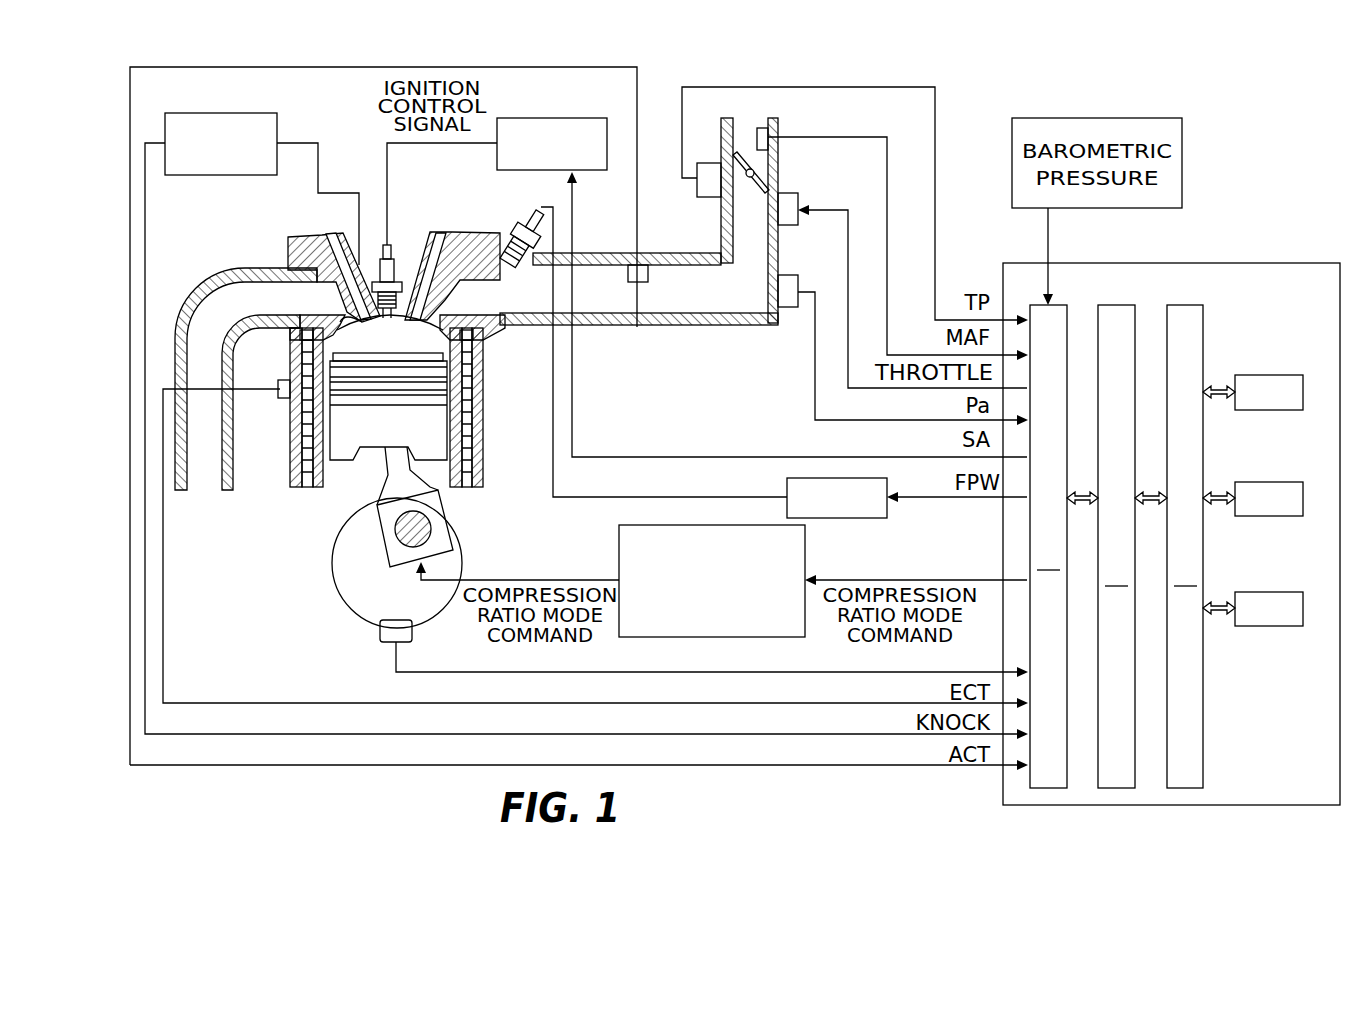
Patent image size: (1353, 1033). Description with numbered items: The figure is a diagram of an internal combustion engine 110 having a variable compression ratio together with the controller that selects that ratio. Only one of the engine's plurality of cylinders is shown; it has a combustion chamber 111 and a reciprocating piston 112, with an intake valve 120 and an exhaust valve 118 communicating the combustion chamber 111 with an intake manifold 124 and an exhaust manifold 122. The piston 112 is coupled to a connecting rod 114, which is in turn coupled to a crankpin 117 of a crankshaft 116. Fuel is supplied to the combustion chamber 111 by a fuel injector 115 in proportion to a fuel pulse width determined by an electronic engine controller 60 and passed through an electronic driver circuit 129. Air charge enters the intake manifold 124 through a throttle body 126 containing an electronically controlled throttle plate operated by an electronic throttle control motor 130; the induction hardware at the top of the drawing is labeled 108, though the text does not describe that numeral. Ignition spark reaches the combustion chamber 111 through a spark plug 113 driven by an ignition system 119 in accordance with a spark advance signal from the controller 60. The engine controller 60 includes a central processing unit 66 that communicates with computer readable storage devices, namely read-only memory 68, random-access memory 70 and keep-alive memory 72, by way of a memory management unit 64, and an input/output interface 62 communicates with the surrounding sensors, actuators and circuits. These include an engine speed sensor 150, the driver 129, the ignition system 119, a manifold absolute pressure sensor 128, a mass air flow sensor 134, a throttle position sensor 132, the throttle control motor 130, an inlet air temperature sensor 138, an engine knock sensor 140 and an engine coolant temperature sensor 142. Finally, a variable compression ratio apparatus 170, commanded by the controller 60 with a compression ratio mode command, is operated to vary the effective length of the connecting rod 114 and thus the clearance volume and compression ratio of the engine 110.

The electronic engine controller 60 is at (1250, 263).
The input/output interface 62 is at (1048, 546).
The memory management unit 64 is at (1116, 546).
The central processing unit 66 is at (1185, 546).
The read-only memory 68 is at (1262, 410).
The random-access memory 70 is at (1262, 516).
The keep-alive memory 72 is at (1262, 626).
The air intake system 108 is at (878, 62).
The engine 110 is at (620, 412).
The combustion chamber 111 is at (407, 349).
The piston 112 is at (447, 427).
The spark plug 113 is at (383, 245).
The connecting rod 114 is at (383, 470).
The fuel injector 115 is at (531, 218).
The crankshaft 116 is at (332, 560).
The crankpin 117 is at (428, 525).
The exhaust valve 118 is at (340, 233).
The ignition system 119 is at (560, 118).
The intake valve 120 is at (442, 232).
The exhaust manifold 122 is at (233, 298).
The intake manifold 124 is at (612, 253).
The throttle body 126 is at (750, 257).
The manifold absolute pressure sensor 128 is at (792, 307).
The electronic driver circuit 129 is at (787, 479).
The electronic throttle control motor 130 is at (748, 160).
The throttle position sensor 132 is at (707, 197).
The mass air flow sensor 134 is at (762, 128).
The inlet air temperature sensor 138 is at (648, 282).
The engine knock sensor 140 is at (226, 113).
The engine coolant temperature sensor 142 is at (278, 398).
The engine speed sensor 150 is at (380, 631).
The variable compression ratio apparatus 170 is at (619, 540).